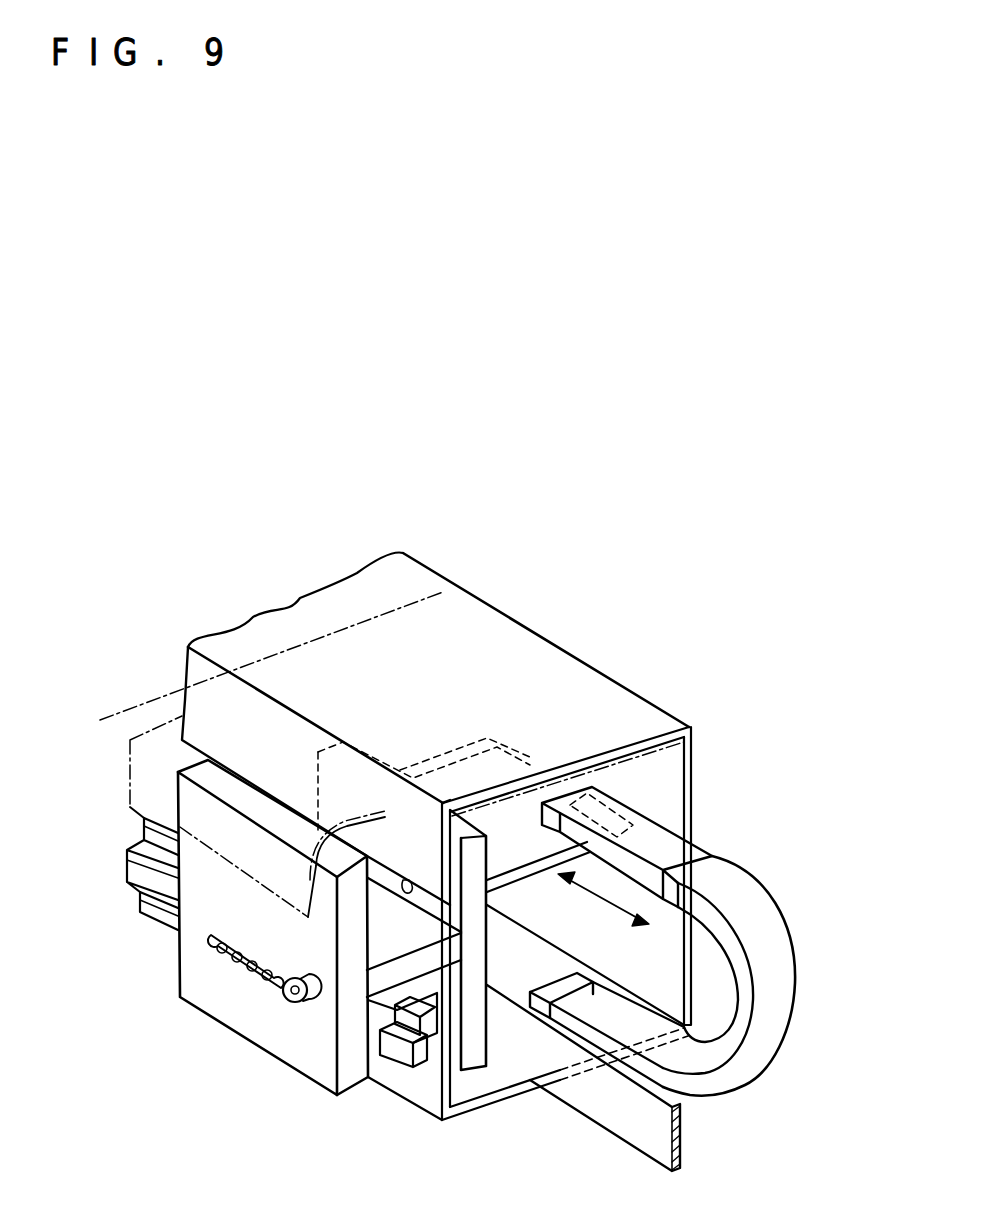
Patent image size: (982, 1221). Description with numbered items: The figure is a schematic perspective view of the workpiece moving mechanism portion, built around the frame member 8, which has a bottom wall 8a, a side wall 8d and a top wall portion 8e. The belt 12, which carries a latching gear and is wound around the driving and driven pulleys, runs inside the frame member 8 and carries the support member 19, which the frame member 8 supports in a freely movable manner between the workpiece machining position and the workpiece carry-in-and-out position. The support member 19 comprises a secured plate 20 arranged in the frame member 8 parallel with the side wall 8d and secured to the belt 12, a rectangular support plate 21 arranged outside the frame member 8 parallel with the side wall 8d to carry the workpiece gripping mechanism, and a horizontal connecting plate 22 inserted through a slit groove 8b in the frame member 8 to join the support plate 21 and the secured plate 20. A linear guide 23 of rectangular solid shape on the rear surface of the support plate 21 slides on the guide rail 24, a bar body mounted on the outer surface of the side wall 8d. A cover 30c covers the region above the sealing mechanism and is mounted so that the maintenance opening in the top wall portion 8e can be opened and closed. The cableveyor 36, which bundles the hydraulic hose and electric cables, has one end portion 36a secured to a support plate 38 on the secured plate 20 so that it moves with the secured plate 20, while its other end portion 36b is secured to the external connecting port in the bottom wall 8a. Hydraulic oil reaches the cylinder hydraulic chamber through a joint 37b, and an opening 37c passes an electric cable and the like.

The frame member 8 is at (468, 848).
The bottom wall 8a is at (528, 1098).
The slit groove 8b is at (395, 798).
The side wall 8d is at (585, 902).
The top wall portion 8e is at (435, 716).
The belt 12 is at (583, 1086).
The support member 19 is at (123, 804).
The secured plate 20 is at (421, 870).
The support plate 21 is at (264, 942).
The connecting plate 22 is at (401, 807).
The linear guide 23 is at (389, 1074).
The guide rail 24 is at (415, 1090).
The cover 30c is at (392, 754).
The cableveyor 36 is at (657, 876).
The one end portion of the cableveyor 36a is at (628, 791).
The other end portion of the cableveyor 36b is at (588, 1012).
The joint 37b is at (295, 1049).
The opening 37c is at (245, 1012).
The support plate 38 is at (475, 761).